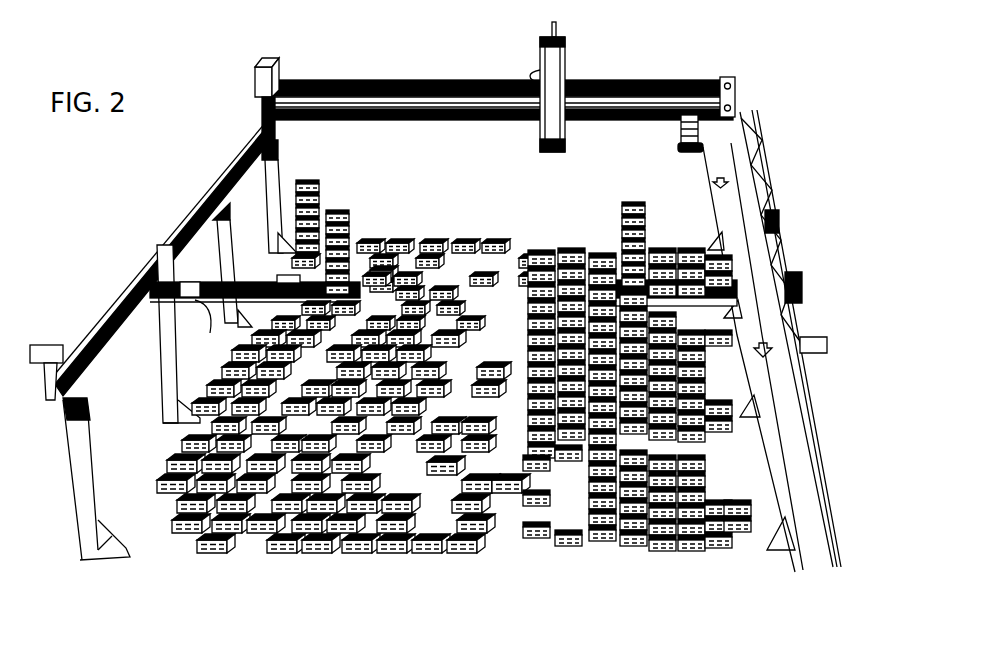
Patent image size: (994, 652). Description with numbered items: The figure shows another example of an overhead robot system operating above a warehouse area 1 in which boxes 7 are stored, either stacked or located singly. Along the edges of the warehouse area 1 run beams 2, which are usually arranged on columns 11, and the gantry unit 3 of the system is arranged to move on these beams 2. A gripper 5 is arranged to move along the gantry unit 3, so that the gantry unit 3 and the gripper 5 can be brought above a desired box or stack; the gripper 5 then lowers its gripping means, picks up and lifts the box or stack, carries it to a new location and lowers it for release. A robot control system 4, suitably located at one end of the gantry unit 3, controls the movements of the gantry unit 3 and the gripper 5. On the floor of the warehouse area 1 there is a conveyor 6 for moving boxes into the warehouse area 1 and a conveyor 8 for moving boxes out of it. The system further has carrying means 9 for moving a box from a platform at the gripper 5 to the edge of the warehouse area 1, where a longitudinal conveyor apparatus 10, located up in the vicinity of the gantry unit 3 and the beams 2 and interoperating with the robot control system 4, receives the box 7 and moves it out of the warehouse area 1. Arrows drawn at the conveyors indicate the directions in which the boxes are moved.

The warehouse area 1 is at (454, 396).
The beams 2 is at (230, 163).
The gantry unit 3 is at (452, 108).
The robot control system 4 is at (280, 76).
The gripper 5 is at (551, 60).
The conveyor 6 is at (212, 300).
The boxes 7 is at (440, 245).
The conveyor 8 is at (797, 285).
The carrying means 9 is at (678, 140).
The longitudinal conveyor apparatus 10 is at (722, 212).
The columns 11 is at (165, 383).